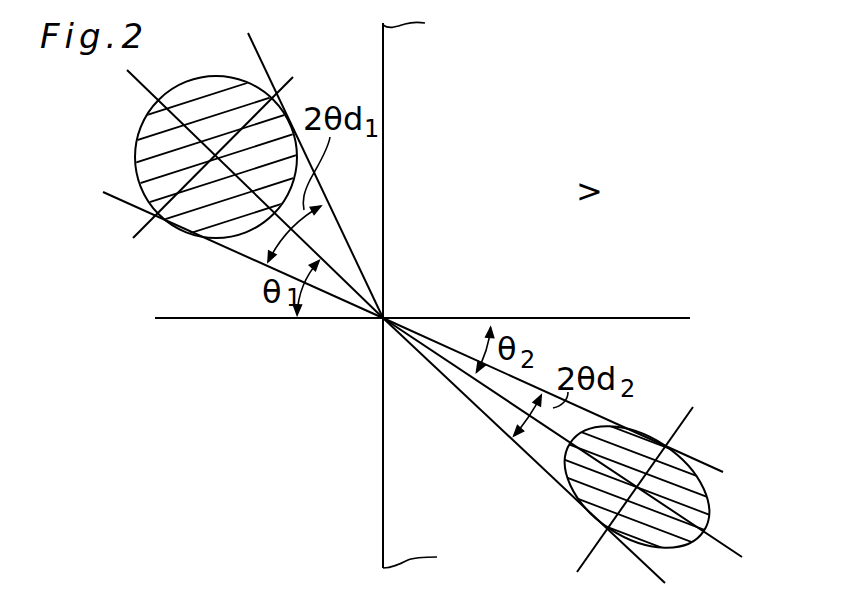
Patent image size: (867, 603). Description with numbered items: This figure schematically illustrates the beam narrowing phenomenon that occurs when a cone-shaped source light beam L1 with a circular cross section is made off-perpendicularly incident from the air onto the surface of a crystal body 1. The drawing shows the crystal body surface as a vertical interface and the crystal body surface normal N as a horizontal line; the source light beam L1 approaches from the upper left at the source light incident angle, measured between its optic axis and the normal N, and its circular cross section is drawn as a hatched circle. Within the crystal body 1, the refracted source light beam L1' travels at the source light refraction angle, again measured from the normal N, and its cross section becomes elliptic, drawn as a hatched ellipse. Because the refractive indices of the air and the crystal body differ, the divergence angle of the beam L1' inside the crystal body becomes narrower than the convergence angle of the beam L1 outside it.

The crystal body 1 is at (394, 55).
The crystal body surface normal N is at (230, 318).
The source light beam L1 is at (243, 175).
The source light beam within the crystal body L1' is at (562, 450).